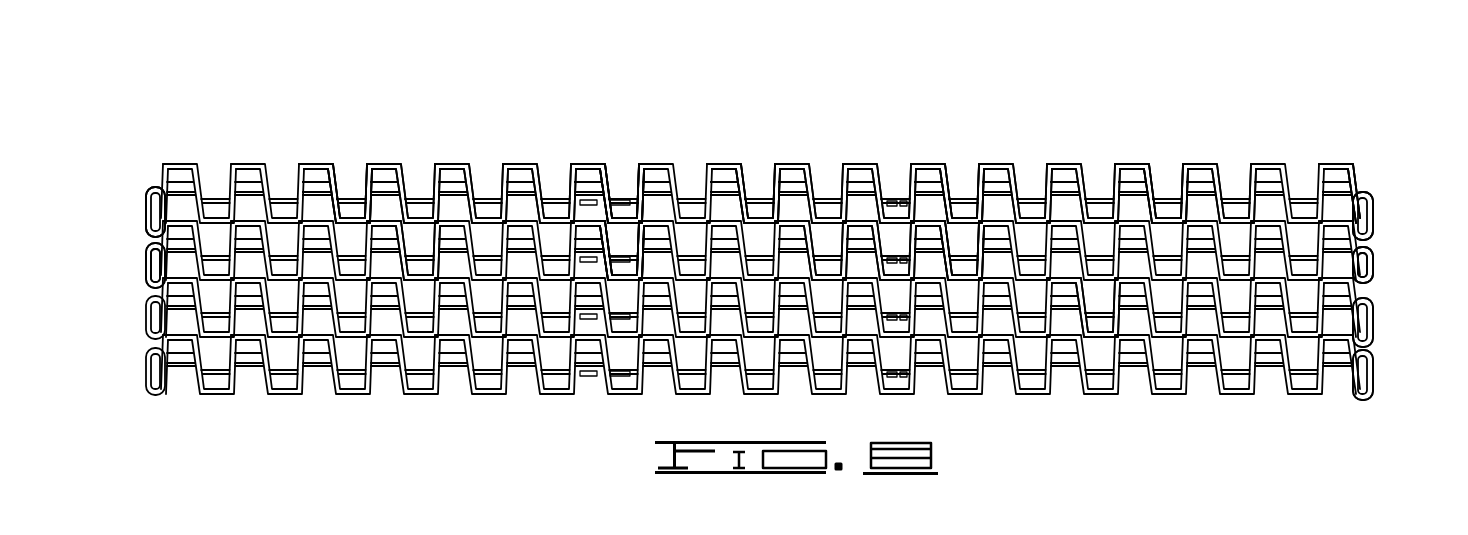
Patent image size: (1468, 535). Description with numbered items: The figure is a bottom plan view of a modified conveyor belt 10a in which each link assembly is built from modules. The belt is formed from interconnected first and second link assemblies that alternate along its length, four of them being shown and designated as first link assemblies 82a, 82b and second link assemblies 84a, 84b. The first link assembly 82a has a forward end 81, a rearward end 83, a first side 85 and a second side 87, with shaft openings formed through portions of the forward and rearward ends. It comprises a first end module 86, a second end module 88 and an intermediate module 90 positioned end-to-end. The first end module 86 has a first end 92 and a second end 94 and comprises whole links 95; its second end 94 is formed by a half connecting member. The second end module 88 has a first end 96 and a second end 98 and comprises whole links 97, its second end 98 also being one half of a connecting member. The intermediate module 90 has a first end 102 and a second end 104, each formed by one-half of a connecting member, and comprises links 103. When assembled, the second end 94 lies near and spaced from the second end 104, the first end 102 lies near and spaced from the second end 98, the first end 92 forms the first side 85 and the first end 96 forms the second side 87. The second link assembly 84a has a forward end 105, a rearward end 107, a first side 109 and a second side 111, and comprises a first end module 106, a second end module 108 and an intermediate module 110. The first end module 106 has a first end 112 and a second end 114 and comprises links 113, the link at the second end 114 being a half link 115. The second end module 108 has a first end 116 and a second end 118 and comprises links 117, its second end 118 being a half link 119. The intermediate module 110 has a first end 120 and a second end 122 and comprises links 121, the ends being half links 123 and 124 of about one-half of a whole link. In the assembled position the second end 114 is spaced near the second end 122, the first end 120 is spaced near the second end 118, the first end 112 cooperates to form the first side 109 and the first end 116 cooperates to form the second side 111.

The conveyor belt 10a is at (1383, 218).
The forward end 81 is at (523, 160).
The first link assembly 82a is at (1356, 176).
The first link assembly 82b is at (1378, 314).
The rearward end 83 is at (423, 246).
The second link assembly 84a is at (1379, 260).
The second link assembly 84b is at (1378, 369).
The first side 85 is at (150, 184).
The first end module 86 is at (451, 160).
The second side 87 is at (1365, 183).
The second end module 88 is at (1118, 157).
The intermediate module 90 is at (797, 160).
The first end 92 is at (160, 186).
The second end 94 is at (610, 185).
The link 95 is at (313, 166).
The first end 96 is at (1353, 172).
The link 97 is at (1057, 167).
The second end 98 is at (887, 200).
The first end 102 is at (886, 186).
The link 103 is at (716, 195).
The second end 104 is at (637, 187).
The forward end 105 is at (995, 202).
The first end module 106 is at (383, 200).
The rearward end 107 is at (1098, 296).
The second end module 108 is at (1200, 202).
The first side 109 is at (153, 265).
The intermediate module 110 is at (727, 204).
The second side 111 is at (1364, 268).
The first end 112 is at (156, 245).
The link 113 is at (315, 213).
The second end 114 is at (585, 267).
The half link 115 is at (579, 217).
The first end 116 is at (1366, 244).
The link 117 is at (1128, 195).
The second end 118 is at (937, 265).
The half link 119 is at (933, 210).
The first end 120 is at (943, 258).
The link 121 is at (792, 232).
The second end 122 is at (605, 255).
The half link 123 is at (917, 238).
The half link 124 is at (615, 247).